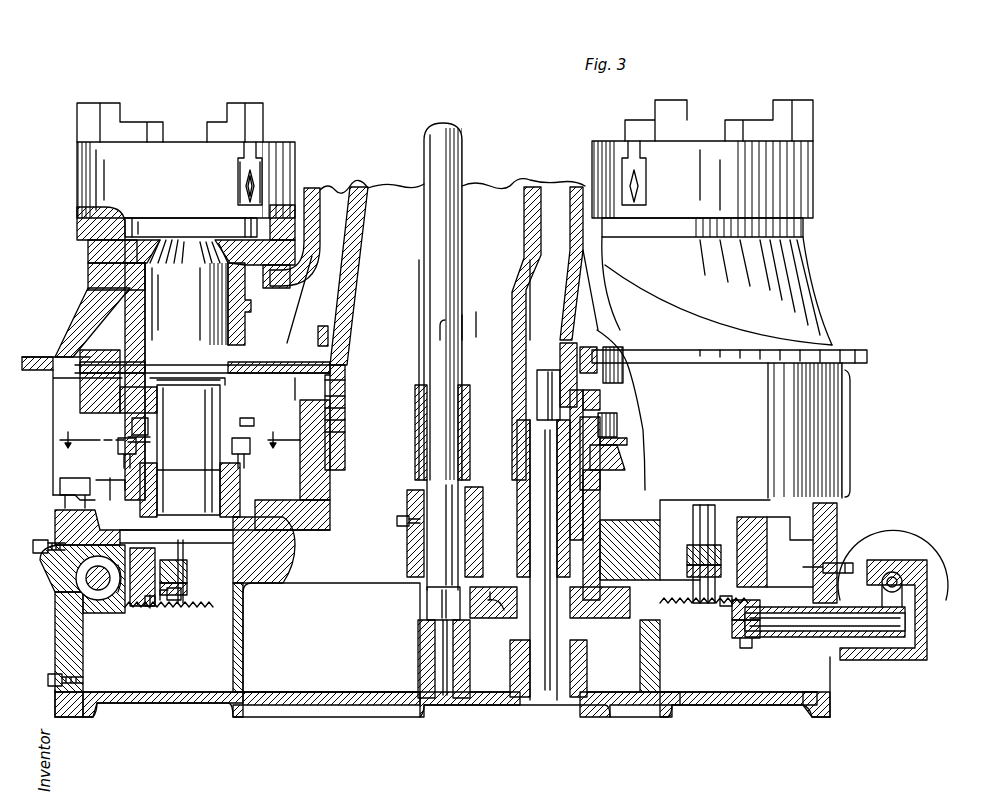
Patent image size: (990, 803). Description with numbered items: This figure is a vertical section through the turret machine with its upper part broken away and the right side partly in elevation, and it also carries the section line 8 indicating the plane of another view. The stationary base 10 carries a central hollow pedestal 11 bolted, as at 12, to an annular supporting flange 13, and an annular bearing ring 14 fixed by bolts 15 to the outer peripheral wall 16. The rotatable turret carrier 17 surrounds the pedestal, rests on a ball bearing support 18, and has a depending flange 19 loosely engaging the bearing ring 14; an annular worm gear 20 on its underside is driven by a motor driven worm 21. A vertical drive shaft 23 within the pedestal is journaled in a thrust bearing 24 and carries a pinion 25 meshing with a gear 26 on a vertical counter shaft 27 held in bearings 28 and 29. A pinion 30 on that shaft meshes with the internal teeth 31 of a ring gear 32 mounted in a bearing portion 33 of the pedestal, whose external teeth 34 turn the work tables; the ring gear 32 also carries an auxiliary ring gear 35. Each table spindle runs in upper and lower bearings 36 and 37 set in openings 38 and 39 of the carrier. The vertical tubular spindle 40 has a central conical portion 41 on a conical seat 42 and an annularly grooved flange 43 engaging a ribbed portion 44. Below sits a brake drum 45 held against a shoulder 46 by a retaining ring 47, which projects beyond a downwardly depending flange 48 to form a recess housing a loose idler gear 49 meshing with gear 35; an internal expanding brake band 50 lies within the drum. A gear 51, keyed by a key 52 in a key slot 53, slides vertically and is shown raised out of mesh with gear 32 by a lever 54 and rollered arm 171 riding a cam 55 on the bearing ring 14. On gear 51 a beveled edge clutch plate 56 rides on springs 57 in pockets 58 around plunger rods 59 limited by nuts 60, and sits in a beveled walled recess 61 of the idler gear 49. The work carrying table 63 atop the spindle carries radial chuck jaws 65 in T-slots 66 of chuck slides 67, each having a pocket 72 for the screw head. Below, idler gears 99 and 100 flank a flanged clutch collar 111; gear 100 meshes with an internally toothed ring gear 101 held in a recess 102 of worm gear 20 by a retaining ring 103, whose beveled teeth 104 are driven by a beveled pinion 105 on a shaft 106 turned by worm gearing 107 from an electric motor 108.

The section line 8- 8 is at (180, 431).
The stationary base 10 is at (300, 707).
The central hollow pedestal 11 is at (352, 292).
The bolts 12 is at (292, 563).
The annular supporting flange 13 is at (243, 622).
The annular bearing ring 14 is at (50, 560).
The bolts 15 is at (33, 548).
The outer peripheral wall 16 is at (55, 632).
The rotatable turret carrier 17 is at (322, 439).
The ball bearing support 18 is at (287, 541).
The depending flange 19 is at (52, 495).
The annular worm gear 20 is at (768, 564).
The motor driven worm 21 is at (86, 590).
The vertical drive shaft 23 is at (446, 242).
The thrust bearing 24 is at (418, 660).
The pinion 25 is at (425, 608).
The gear 26 is at (493, 612).
The vertical counter shaft 27 is at (550, 535).
The bearing 28 is at (588, 660).
The bearing 29 is at (503, 522).
The pinion 30 is at (618, 432).
The internal teeth 31 is at (605, 408).
The ring gear 32 is at (618, 418).
The bearing portion 33 is at (612, 452).
The external teeth 34 is at (332, 458).
The auxiliary ring gear 35 is at (615, 350).
The upper bearing 36 is at (247, 310).
The lower bearing 37 is at (125, 484).
The opening 38 is at (265, 280).
The opening 39 is at (302, 508).
The vertical tubular spindle 40 is at (188, 450).
The central conical portion 41 is at (172, 248).
The conical seat 42 is at (88, 259).
The annularly grooved flange 43 is at (332, 190).
The ribbed portion 44 is at (306, 262).
The brake drum 45 is at (318, 334).
The shoulder 46 is at (222, 335).
The retaining ring 47 is at (215, 394).
The downwardly depending flange 48 is at (340, 363).
The loose idler gear 49 is at (444, 333).
The internal expanding brake band 50 is at (105, 362).
The gear 51 is at (80, 392).
The key 52 is at (130, 424).
The key slot 53 is at (155, 448).
The lever 54 is at (118, 449).
The cam 55 is at (58, 517).
The beveled edge clutch plate 56 is at (338, 398).
The springs 57 is at (338, 411).
The pockets 58 is at (335, 424).
The plunger rods 59 is at (348, 434).
The nuts 60 is at (251, 422).
The beveled walled recess 61 is at (348, 386).
The work carrying table 63 is at (297, 156).
The radial chuck jaws 65 is at (122, 110).
The T-slots 66 is at (238, 160).
The chuck slides 67 is at (250, 165).
The pocket 72 is at (246, 192).
The idler gear 99 is at (718, 560).
The idler gear 100 is at (690, 606).
The internally toothed ring gear 101 is at (725, 606).
The recess 102 is at (160, 612).
The retaining ring 103 is at (150, 612).
The beveled teeth 104 is at (735, 620).
The beveled pinion 105 is at (746, 648).
The shaft 106 is at (810, 637).
The worm gearing 107 is at (900, 636).
The electric motor 108 is at (915, 555).
The flanged clutch collar 111 is at (722, 575).
The rollered arm 171 is at (88, 493).